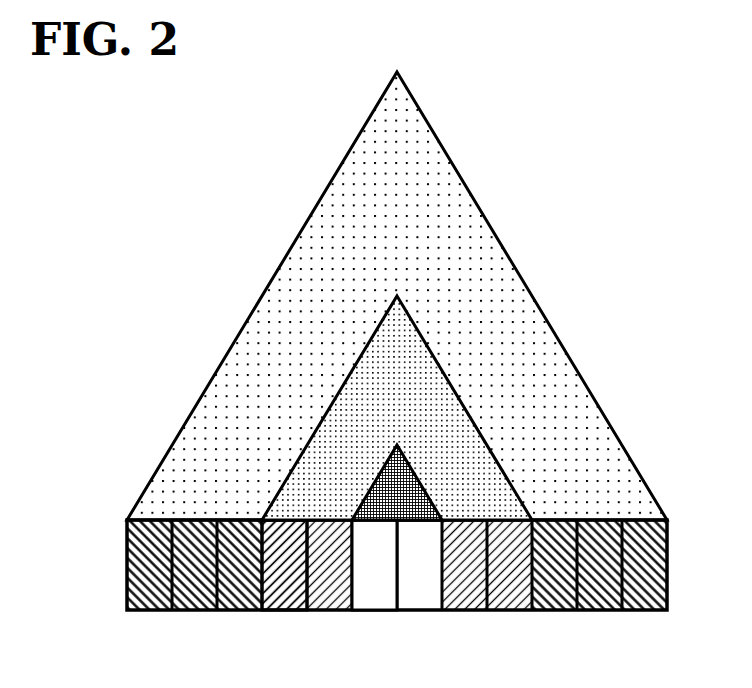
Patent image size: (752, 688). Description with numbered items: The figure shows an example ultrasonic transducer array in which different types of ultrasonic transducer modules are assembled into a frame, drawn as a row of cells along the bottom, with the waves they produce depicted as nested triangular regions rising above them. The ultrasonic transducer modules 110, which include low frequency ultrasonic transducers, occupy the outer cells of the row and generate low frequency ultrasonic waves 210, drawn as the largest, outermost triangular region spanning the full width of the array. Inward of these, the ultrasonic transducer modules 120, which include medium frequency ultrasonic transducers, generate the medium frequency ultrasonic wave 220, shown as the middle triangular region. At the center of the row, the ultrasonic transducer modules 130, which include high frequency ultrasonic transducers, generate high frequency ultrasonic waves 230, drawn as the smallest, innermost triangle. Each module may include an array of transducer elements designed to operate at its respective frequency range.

The ultrasonic transducer modules 110 is at (125, 598).
The ultrasonic transducer modules 120 is at (290, 614).
The ultrasonic transducer modules 130 is at (368, 613).
The low frequency ultrasonic waves 210 is at (166, 452).
The medium frequency ultrasonic wave 220 is at (462, 397).
The high frequency ultrasonic waves 230 is at (439, 501).